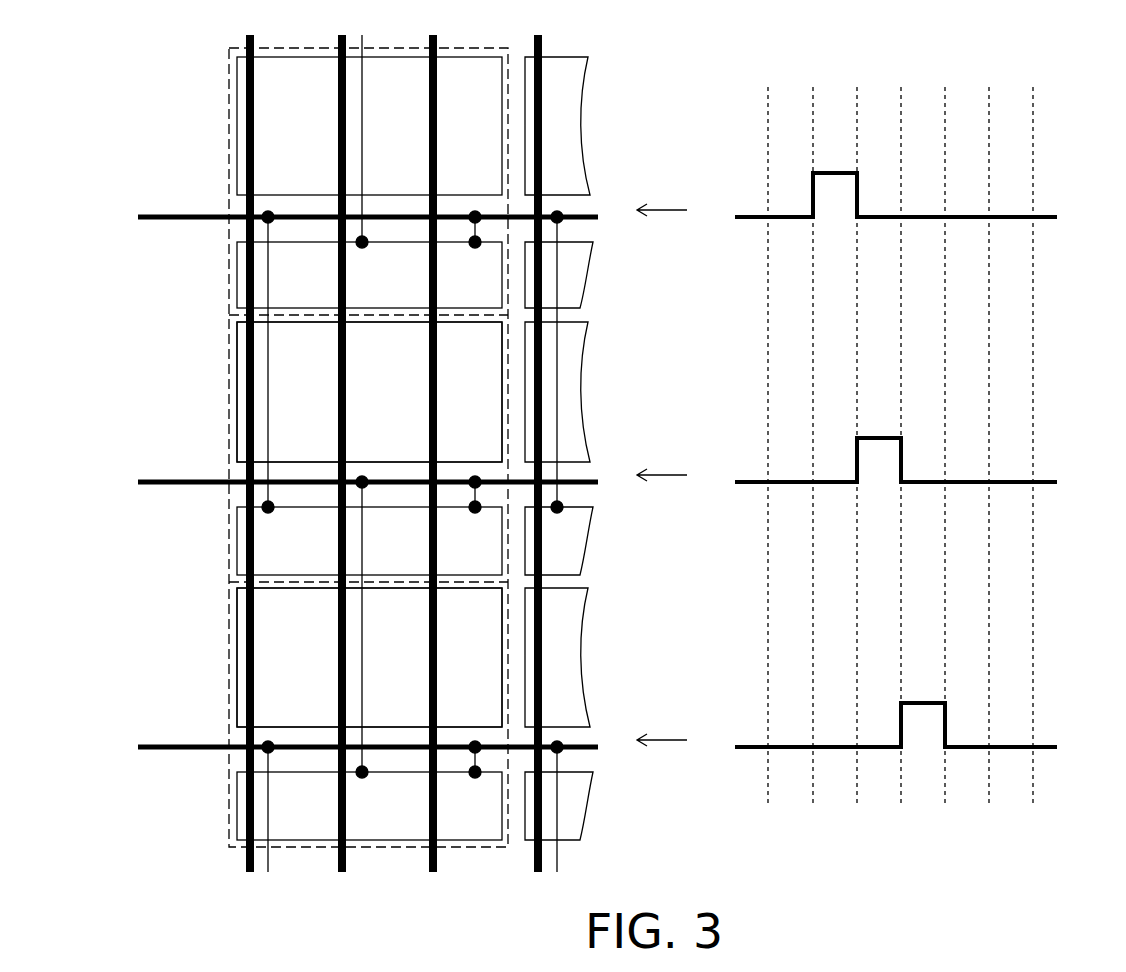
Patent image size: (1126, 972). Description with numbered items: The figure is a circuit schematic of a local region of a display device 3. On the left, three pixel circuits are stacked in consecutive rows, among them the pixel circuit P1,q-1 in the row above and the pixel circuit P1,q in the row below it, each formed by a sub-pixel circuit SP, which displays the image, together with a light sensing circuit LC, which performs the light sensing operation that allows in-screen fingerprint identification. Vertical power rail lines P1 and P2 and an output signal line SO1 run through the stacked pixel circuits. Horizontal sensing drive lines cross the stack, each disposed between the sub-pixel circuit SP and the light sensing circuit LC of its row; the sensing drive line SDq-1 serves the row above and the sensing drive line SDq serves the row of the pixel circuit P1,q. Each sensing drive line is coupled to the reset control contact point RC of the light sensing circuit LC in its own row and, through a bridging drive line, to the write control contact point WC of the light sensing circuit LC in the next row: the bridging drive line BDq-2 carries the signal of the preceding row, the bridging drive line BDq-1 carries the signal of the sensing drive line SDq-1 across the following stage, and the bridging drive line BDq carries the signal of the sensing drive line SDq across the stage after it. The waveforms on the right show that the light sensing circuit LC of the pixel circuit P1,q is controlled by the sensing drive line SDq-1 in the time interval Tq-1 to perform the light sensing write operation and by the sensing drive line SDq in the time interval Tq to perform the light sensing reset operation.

The display device 3 is at (79, 67).
The power rail line P1 is at (395, 471).
The output signal line SO1 is at (344, 471).
The power rail line P2 is at (437, 471).
The pixel circuit P1,q-1 is at (229, 120).
The pixel circuit P1,q is at (229, 405).
The sub-pixel circuit SP is at (237, 351).
The light sensing circuit LC is at (237, 278).
The sensing drive line SDq-1 is at (331, 218).
The sensing drive line SDq is at (343, 483).
The bridging drive line BDq-2 is at (363, 158).
The bridging drive line BDq-1 is at (269, 416).
The bridging drive line BDq is at (363, 692).
The write control contact point WC is at (411, 512).
The reset control contact point RC is at (472, 512).
The time interval Tq-1 is at (896, 522).
The time interval Tq is at (896, 654).